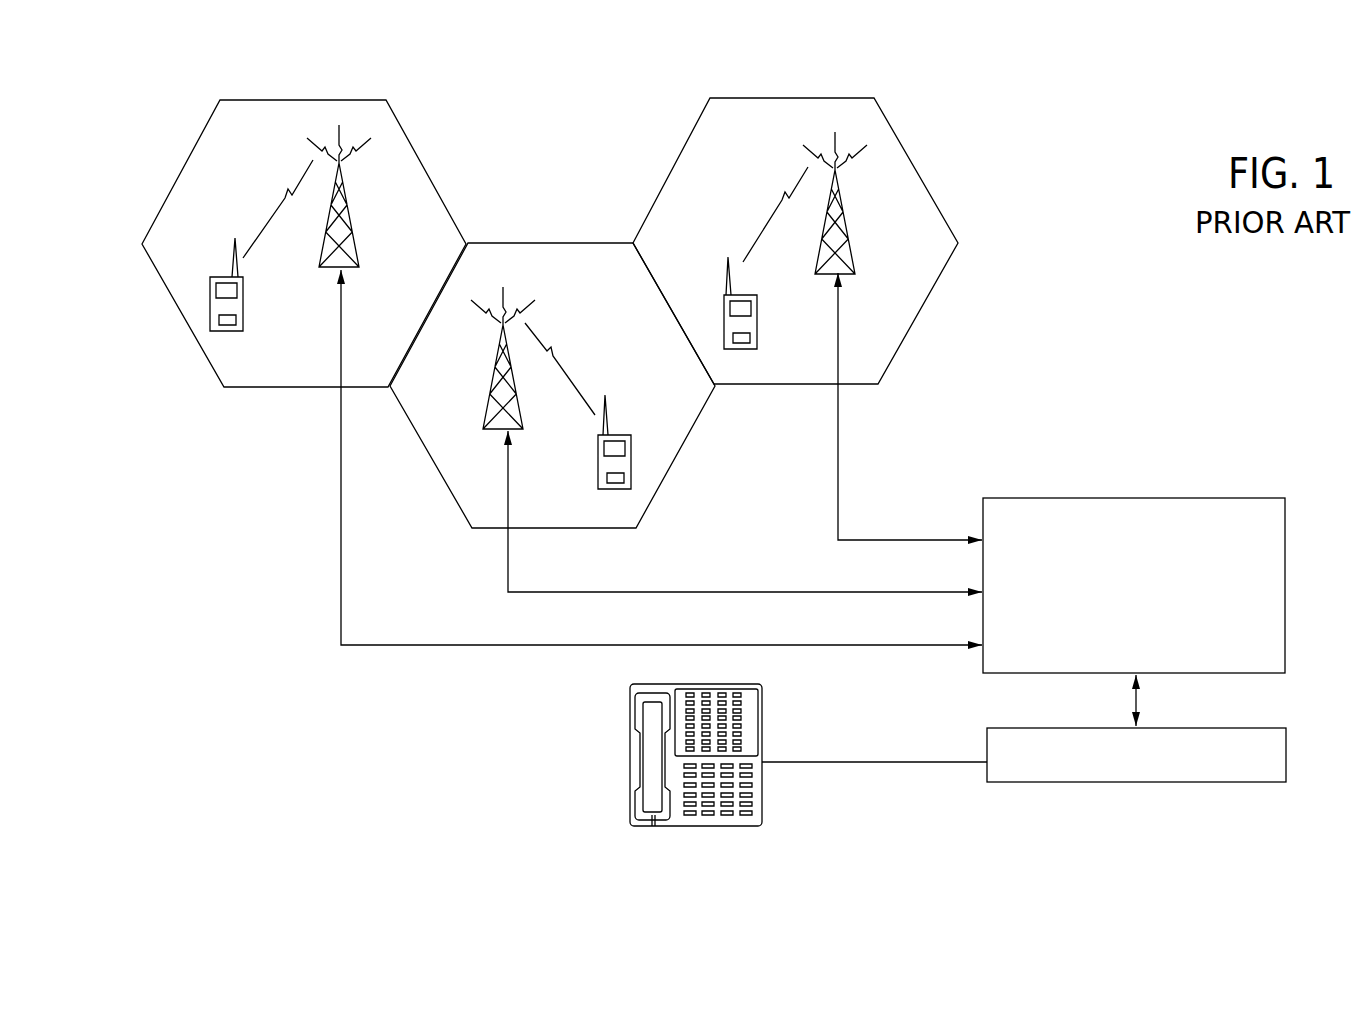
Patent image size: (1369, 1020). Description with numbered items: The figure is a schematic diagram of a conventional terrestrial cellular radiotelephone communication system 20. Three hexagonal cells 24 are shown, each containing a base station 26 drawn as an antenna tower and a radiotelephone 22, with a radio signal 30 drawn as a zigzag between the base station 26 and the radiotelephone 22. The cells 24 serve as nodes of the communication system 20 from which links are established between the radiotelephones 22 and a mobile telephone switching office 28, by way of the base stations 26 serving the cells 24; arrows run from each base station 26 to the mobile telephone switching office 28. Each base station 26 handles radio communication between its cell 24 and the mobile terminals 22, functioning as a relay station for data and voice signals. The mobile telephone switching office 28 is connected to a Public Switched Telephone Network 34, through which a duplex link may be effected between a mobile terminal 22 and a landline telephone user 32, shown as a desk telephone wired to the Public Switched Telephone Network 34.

The cellular radiotelephone communication system 20 is at (1012, 197).
The radiotelephone 22 is at (210, 277).
The cell 24 is at (452, 490).
The base station 26 is at (357, 208).
The mobile telephone switching office 28 is at (1242, 495).
The radio signal 30 is at (262, 207).
The landline telephone user 32 is at (628, 732).
The Public Switched Telephone Network 34 is at (1220, 780).